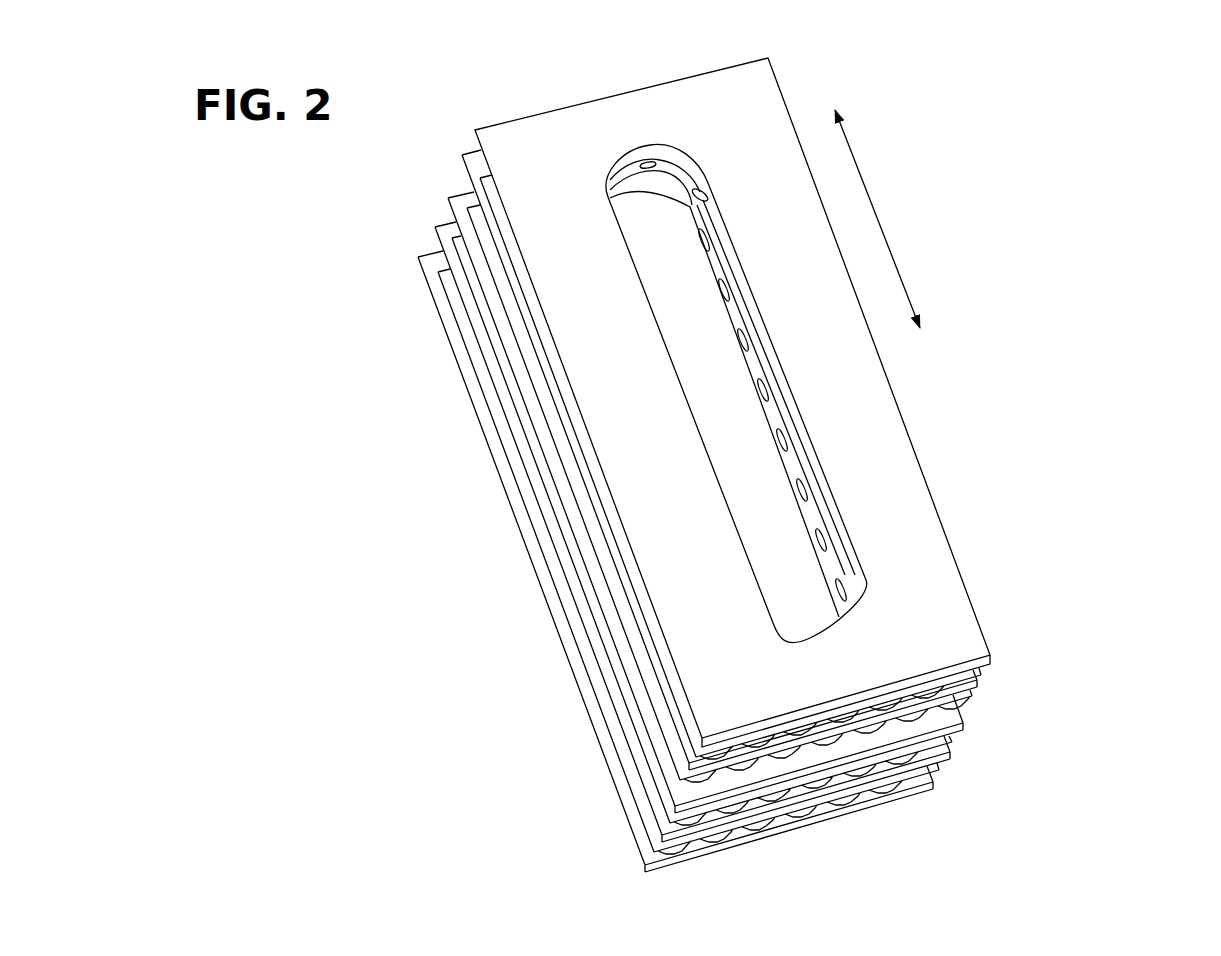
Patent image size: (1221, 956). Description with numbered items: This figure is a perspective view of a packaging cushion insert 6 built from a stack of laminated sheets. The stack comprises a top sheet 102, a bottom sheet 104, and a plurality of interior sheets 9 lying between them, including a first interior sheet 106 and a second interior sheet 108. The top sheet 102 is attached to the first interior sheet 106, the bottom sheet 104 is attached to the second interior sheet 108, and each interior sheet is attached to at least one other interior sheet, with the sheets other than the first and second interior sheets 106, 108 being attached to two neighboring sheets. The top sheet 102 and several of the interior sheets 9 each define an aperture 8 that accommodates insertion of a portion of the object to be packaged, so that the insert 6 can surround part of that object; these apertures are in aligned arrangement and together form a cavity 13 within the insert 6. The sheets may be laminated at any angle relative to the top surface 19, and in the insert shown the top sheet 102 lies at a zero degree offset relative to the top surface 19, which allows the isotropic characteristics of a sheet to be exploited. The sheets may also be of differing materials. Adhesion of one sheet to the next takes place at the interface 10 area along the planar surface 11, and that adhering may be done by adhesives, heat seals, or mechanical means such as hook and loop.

The packaging cushion insert 6 is at (1105, 217).
The aperture 8 is at (672, 145).
The plurality of interior sheets 9 is at (533, 532).
The interface 10 is at (969, 747).
The planar surface 11 is at (909, 219).
The cavity 13 is at (792, 538).
The top surface 19 is at (918, 541).
The top sheet 102 is at (773, 62).
The bottom sheet 104 is at (420, 259).
The first interior sheet 106 is at (988, 680).
The second interior sheet 108 is at (648, 828).